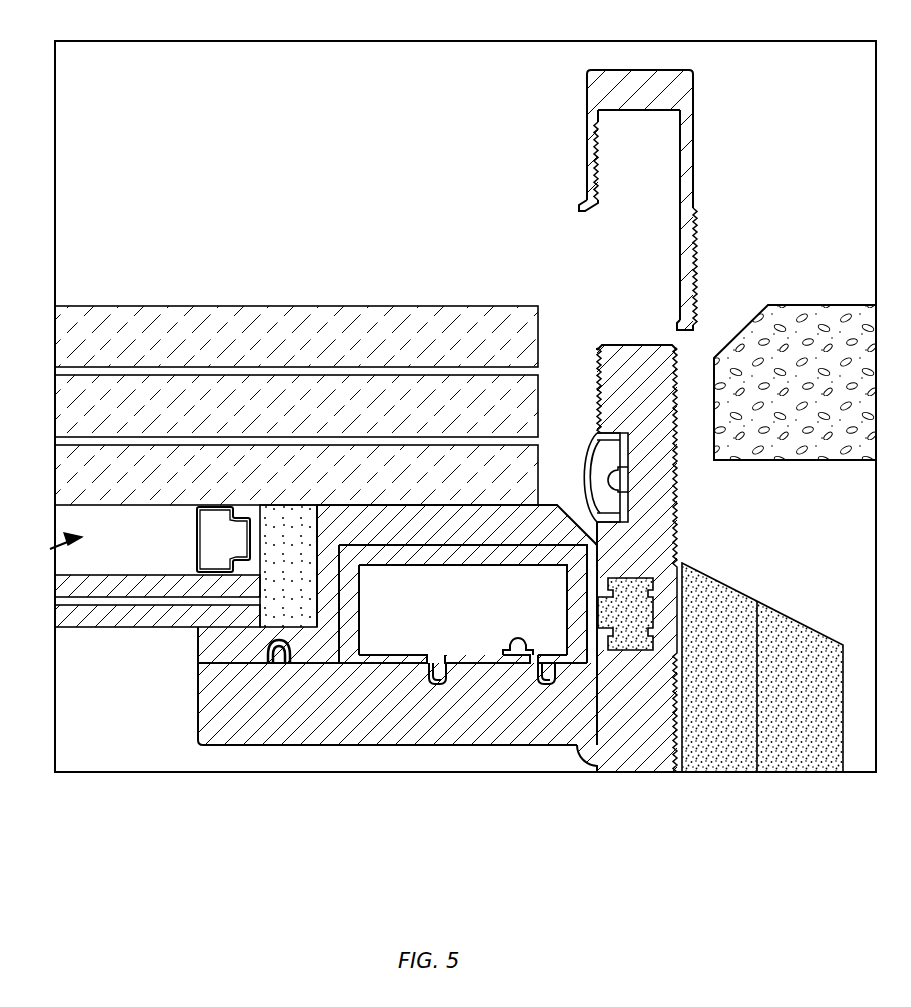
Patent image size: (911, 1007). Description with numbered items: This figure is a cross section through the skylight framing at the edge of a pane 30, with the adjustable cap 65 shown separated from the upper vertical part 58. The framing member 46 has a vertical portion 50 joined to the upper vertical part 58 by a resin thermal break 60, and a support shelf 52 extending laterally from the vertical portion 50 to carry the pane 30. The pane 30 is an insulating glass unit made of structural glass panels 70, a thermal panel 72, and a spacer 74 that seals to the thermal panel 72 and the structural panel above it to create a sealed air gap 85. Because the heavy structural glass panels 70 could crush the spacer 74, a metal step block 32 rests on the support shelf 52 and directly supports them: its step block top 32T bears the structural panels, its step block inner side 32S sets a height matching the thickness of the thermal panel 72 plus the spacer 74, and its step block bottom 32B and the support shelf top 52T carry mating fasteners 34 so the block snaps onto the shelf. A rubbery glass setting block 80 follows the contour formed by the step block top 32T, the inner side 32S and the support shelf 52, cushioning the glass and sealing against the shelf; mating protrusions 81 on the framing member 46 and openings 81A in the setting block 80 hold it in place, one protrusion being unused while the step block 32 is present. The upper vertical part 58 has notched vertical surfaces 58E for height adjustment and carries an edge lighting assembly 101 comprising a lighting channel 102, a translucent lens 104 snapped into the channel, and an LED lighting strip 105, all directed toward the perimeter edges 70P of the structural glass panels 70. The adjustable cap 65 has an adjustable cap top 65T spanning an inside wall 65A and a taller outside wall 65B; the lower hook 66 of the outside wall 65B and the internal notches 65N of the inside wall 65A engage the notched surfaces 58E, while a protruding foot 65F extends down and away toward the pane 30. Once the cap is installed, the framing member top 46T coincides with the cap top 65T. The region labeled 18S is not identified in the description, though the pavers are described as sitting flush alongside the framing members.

The stone veneer 18S is at (713, 389).
The pane 30 is at (280, 375).
The step block 32 is at (378, 539).
The step block top 32T is at (430, 545).
The step block inner side 32S is at (339, 645).
The step block bottom 32B is at (385, 663).
The mating fasteners 34 is at (433, 686).
The framing member 46 is at (617, 565).
The framing member top 46T is at (640, 345).
The vertical portion 50 is at (667, 773).
The support shelf 52 is at (343, 697).
The support shelf top 52T is at (210, 663).
The upper vertical part 58 is at (678, 476).
The notched vertical surfaces 58E is at (597, 380).
The thermal break 60 is at (654, 608).
The adjustable cap 65 is at (644, 169).
The adjustable cap top 65T is at (655, 70).
The inside wall 65A is at (587, 125).
The outside wall 65B is at (693, 150).
The internal notches 65N is at (600, 150).
The protruding foot 65F is at (582, 200).
The lower hook 66 is at (676, 322).
The structural glass panels 70 is at (51, 346).
The perimeter edge 70P is at (280, 375).
The thermal panel 72 is at (55, 587).
The spacer 74 is at (197, 540).
The glass setting block 80 is at (200, 645).
The mating protrusions 81 is at (518, 638).
The openings 81A is at (262, 660).
The air gap 85 is at (50, 552).
The edge lighting assembly 101 is at (584, 456).
The lighting channel 102 is at (622, 433).
The translucent lighting lens 104 is at (584, 470).
The LED lighting strip 105 is at (614, 484).